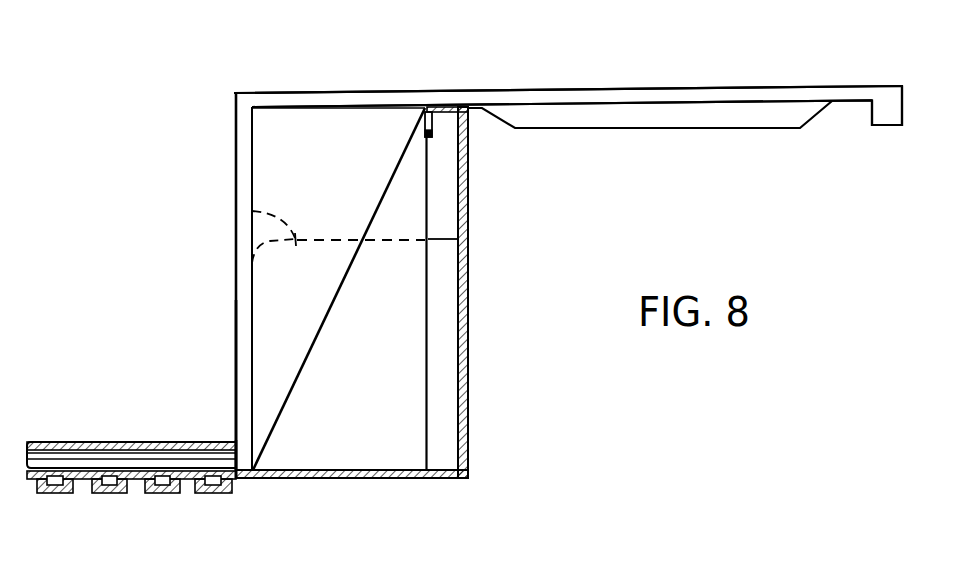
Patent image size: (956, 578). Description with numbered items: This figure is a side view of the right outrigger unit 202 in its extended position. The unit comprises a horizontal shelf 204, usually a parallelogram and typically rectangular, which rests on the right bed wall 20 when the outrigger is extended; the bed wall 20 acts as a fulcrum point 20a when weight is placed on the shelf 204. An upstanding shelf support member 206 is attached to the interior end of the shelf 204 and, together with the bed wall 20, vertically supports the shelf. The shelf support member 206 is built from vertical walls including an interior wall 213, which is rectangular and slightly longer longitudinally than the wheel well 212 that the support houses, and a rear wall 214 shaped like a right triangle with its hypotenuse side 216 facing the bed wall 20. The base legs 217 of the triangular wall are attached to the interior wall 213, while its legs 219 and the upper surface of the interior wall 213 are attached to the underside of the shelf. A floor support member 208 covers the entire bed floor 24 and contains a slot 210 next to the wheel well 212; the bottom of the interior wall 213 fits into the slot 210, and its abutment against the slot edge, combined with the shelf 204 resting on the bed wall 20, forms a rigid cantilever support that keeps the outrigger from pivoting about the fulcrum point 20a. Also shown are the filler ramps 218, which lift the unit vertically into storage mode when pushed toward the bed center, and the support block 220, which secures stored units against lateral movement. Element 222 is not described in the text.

The right outrigger unit 202 is at (760, 80).
The horizontal shelf 204 is at (662, 92).
The upstanding shelf support member 206 is at (237, 272).
The floor support member 208 is at (120, 442).
The slot 210 is at (236, 442).
The wheel well 212 is at (252, 211).
The interior wall 213 is at (237, 322).
The rear wall 214 is at (355, 127).
The hypotenuse side 216 is at (318, 338).
The base legs 217 is at (252, 144).
The filler ramps 218 is at (653, 120).
The legs 219 is at (323, 107).
The support block 220 is at (876, 116).
The inner panel 222 is at (410, 397).
The right bed wall 20 is at (468, 185).
The fulcrum point 20a is at (440, 108).
The bed floor 24 is at (157, 495).